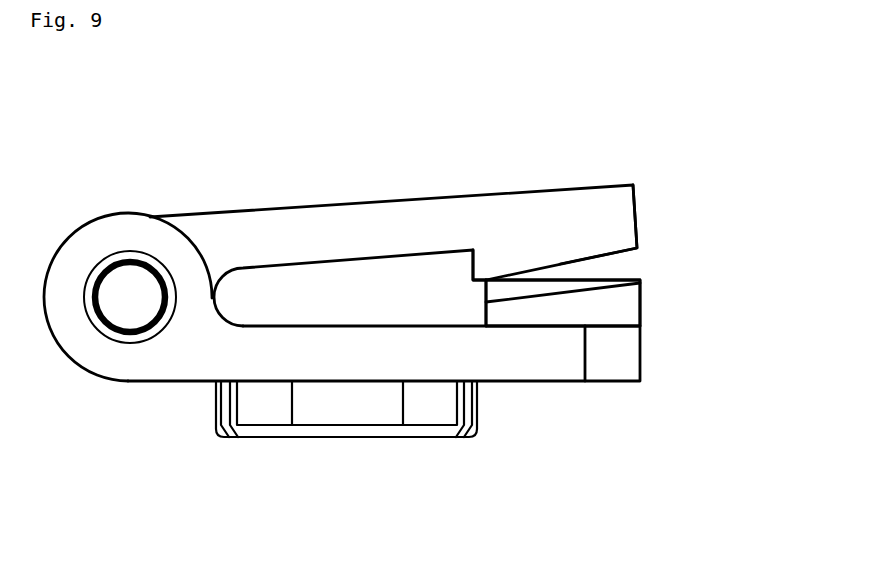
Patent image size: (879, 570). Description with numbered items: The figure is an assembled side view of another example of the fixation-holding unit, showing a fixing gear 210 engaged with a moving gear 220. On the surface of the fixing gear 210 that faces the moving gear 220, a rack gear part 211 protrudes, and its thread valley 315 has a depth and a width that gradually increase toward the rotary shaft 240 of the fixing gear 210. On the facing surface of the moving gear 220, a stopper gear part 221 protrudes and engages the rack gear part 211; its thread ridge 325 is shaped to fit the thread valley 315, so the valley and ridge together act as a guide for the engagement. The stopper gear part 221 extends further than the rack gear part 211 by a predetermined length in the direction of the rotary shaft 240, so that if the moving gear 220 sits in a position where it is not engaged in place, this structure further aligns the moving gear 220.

The fixing gear 210 is at (348, 360).
The rack gear part 211 is at (502, 288).
The moving gear 220 is at (283, 230).
The stopper gear part 221 is at (548, 256).
The rotary shaft 240 is at (125, 303).
The thread valley 315 is at (567, 292).
The thread ridge 325 is at (477, 280).